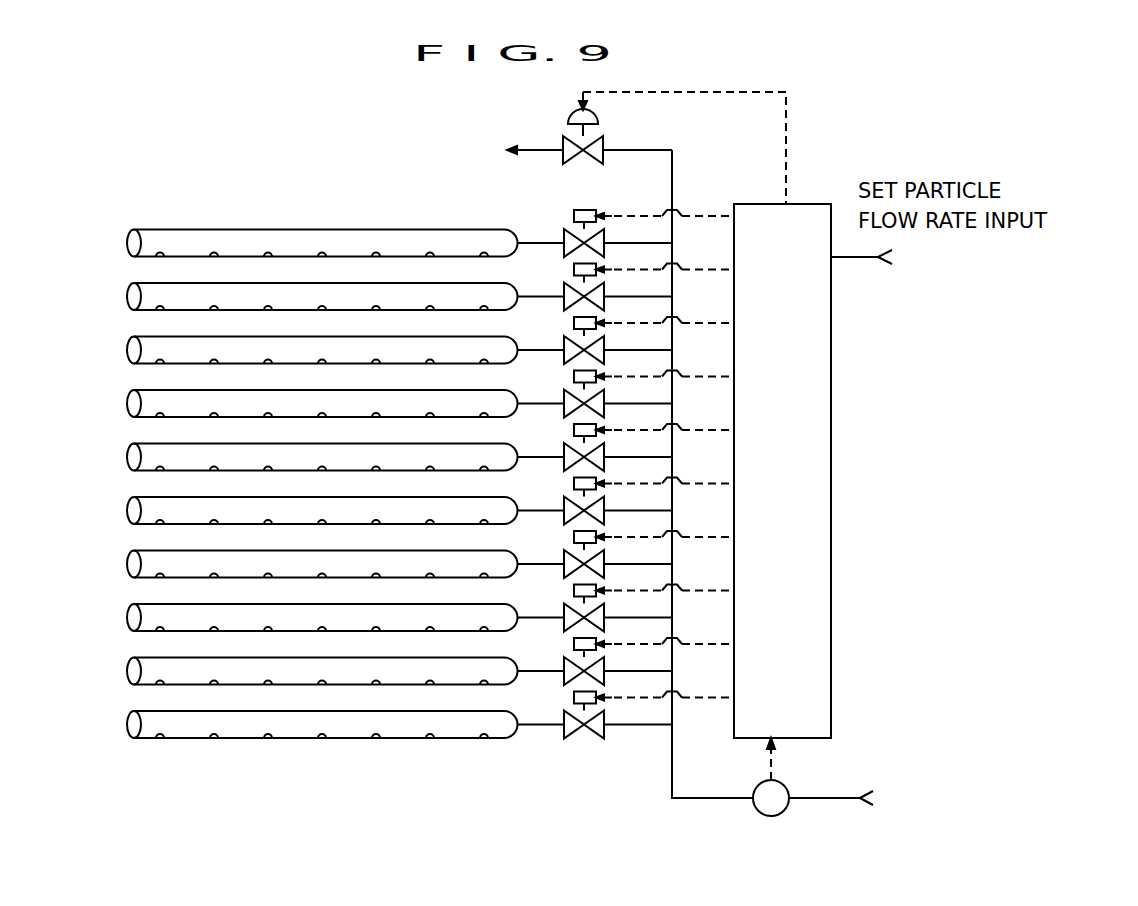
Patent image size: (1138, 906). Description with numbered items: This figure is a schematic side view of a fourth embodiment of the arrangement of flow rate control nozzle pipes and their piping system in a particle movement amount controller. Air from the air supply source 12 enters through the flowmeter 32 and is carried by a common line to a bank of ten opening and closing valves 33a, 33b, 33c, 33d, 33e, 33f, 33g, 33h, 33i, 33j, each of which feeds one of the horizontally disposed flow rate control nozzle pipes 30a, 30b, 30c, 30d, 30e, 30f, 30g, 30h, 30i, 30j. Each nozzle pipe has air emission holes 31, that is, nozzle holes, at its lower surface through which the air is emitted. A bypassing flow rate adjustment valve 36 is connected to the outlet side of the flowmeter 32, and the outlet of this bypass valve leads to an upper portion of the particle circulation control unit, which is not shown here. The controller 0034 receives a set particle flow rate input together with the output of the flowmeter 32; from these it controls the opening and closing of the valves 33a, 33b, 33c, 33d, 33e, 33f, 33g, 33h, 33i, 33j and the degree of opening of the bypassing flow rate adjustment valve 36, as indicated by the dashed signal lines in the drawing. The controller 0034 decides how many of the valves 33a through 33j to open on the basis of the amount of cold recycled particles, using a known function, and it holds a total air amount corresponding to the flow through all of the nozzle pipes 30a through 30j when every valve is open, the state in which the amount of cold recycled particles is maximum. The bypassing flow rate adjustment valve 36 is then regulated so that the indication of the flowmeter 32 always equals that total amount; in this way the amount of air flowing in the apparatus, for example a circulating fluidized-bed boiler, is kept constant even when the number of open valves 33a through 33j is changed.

The flow rate control nozzle pipe 30a is at (306, 218).
The flow rate control nozzle pipe 30b is at (127, 296).
The flow rate control nozzle pipe 30c is at (127, 350).
The flow rate control nozzle pipe 30d is at (127, 404).
The flow rate control nozzle pipe 30e is at (127, 457).
The flow rate control nozzle pipe 30f is at (127, 510).
The flow rate control nozzle pipe 30g is at (127, 564).
The flow rate control nozzle pipe 30h is at (127, 618).
The flow rate control nozzle pipe 30i is at (127, 671).
The flow rate control nozzle pipe 30j is at (127, 724).
The air emission hole 31 is at (322, 252).
The opening and closing valve 33a is at (564, 235).
The opening and closing valve 33b is at (564, 290).
The opening and closing valve 33c is at (564, 344).
The opening and closing valve 33d is at (564, 398).
The opening and closing valve 33e is at (564, 451).
The opening and closing valve 33f is at (564, 504).
The opening and closing valve 33g is at (564, 558).
The opening and closing valve 33h is at (564, 612).
The opening and closing valve 33i is at (564, 665).
The opening and closing valve 33j is at (564, 718).
The bypassing flow rate adjustment valve 36 is at (563, 143).
The controller 0034 is at (832, 415).
The flowmeter 32 is at (758, 811).
The air supply source 12 is at (823, 798).